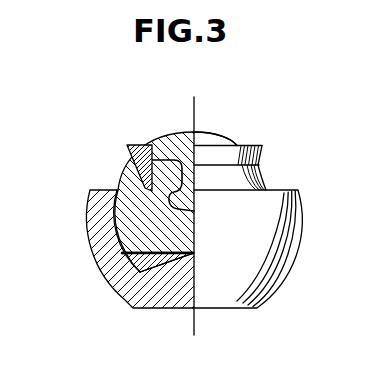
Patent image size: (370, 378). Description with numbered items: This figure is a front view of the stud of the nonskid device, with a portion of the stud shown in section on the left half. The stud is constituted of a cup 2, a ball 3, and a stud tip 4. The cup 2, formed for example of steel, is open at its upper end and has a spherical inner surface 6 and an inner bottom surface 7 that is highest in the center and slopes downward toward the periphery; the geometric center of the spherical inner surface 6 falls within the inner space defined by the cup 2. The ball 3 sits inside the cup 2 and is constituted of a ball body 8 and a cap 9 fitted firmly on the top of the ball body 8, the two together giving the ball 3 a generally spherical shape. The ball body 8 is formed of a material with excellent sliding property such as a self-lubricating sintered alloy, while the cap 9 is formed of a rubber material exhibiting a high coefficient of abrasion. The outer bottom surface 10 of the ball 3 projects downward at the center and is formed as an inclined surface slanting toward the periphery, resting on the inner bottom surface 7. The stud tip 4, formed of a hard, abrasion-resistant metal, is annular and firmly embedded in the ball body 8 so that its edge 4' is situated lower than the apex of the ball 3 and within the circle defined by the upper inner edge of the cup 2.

The cup 2 is at (90, 226).
The ball 3 is at (121, 174).
The stud tip 4 is at (137, 157).
The edge of stud tip 4' is at (249, 140).
The spherical inner surface 6 is at (113, 240).
The inner bottom surface 7 is at (163, 264).
The ball body 8 is at (265, 179).
The cap 9 is at (234, 146).
The outer bottom surface 10 is at (121, 278).